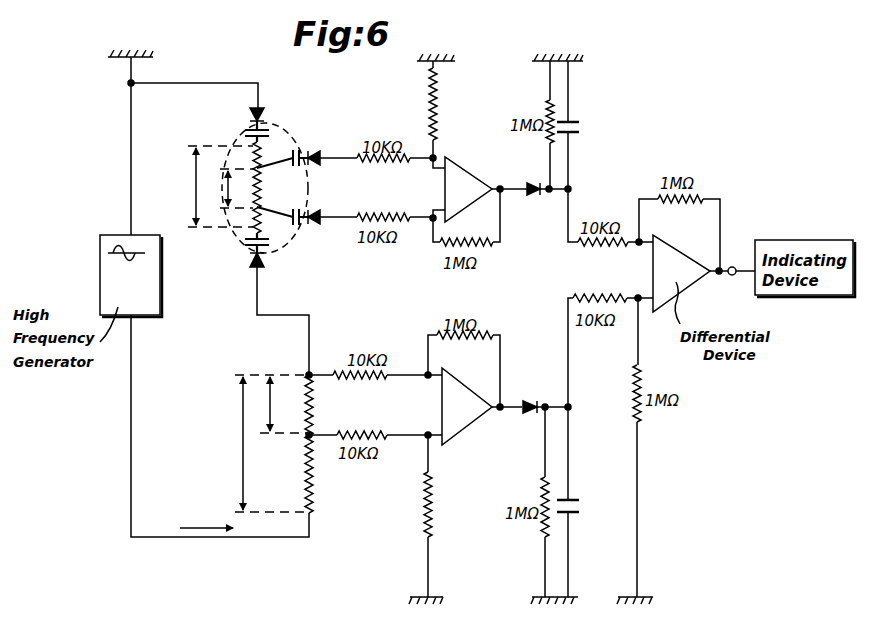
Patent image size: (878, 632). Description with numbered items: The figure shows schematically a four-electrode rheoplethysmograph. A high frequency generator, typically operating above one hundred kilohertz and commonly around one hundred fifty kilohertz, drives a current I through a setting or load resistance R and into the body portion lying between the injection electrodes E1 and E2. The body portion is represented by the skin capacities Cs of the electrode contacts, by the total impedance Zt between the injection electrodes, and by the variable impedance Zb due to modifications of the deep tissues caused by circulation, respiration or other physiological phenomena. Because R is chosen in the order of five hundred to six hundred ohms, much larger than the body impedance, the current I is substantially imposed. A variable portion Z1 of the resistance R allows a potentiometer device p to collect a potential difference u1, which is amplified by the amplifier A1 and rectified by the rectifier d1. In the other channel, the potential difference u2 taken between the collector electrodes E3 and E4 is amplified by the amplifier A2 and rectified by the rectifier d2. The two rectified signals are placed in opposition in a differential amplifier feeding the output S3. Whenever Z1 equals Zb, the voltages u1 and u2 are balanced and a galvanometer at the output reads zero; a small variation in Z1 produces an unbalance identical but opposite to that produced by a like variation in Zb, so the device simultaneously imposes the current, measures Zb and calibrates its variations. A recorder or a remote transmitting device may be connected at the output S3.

The injection electrode E1 is at (263, 109).
The injection electrode E2 is at (263, 266).
The collector electrode E3 is at (318, 151).
The collector electrode E4 is at (318, 226).
The skin capacity Cs is at (276, 189).
The total impedance of the body portion Zt is at (212, 186).
The variable impedance of the deep tissues Zb is at (228, 188).
The potential difference U2 u2 is at (376, 187).
The potential difference U1 u1 is at (375, 405).
The variable portion of the resistance Z1 is at (278, 405).
The load resistance R is at (280, 444).
The potentiometer device p is at (313, 463).
The current I is at (206, 518).
The amplifier A1 is at (468, 416).
The amplifier A2 is at (464, 181).
The rectifier d1 is at (526, 399).
The rectifier d2 is at (532, 197).
The output S3 is at (729, 290).